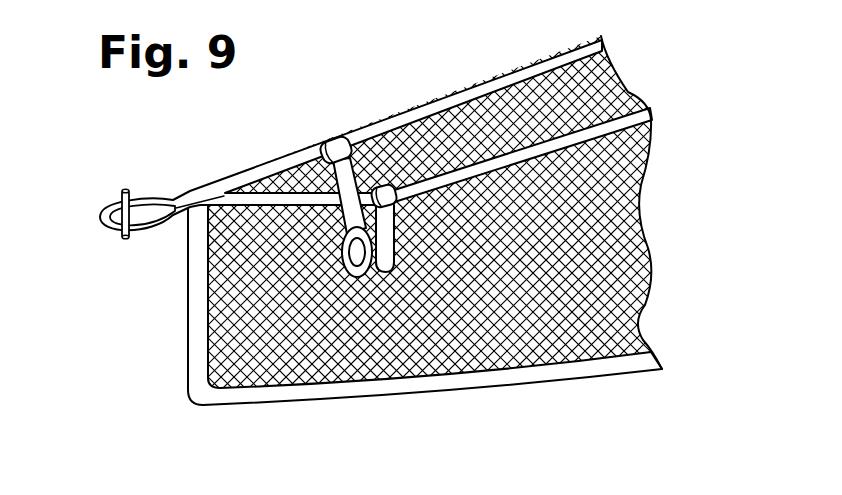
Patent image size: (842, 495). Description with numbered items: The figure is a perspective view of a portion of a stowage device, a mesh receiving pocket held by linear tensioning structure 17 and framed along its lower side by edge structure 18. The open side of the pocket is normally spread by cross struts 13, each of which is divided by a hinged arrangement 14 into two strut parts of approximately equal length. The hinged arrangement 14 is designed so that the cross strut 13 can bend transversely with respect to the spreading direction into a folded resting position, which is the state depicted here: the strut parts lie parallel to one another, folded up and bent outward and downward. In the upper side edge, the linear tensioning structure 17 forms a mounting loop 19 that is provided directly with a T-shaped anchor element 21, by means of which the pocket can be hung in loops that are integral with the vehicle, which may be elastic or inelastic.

The cross strut 13 is at (372, 160).
The hinged arrangement 14 is at (352, 278).
The rope 17 is at (553, 140).
The frame 18 is at (195, 290).
The mounting loop 19 is at (170, 200).
The T-shaped anchor element 21 is at (115, 197).